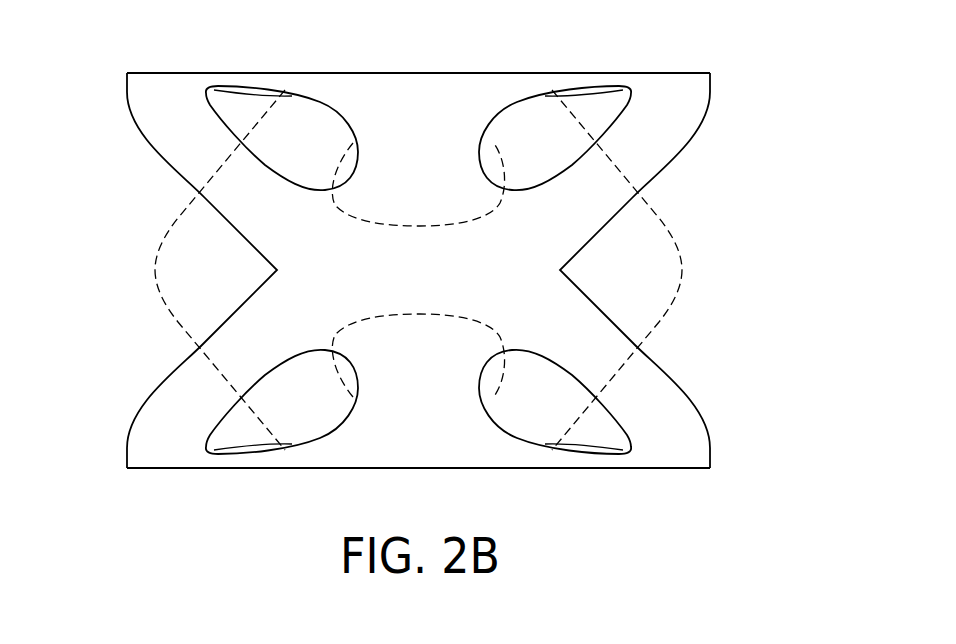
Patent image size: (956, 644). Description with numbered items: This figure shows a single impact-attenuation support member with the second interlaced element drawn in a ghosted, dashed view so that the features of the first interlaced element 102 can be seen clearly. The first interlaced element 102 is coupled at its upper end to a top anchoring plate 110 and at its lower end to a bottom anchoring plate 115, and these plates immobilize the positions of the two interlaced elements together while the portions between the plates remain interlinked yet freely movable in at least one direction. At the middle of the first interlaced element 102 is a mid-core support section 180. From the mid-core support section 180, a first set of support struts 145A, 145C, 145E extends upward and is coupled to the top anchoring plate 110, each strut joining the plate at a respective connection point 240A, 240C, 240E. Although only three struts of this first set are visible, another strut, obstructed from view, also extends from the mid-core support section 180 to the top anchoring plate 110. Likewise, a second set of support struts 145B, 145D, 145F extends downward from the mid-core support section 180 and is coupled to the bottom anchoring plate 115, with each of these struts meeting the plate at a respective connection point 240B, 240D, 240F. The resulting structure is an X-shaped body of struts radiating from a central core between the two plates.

The first interlaced element 102 is at (650, 190).
The top anchoring plate 110 is at (420, 72).
The bottom anchoring plate 115 is at (478, 469).
The support strut 145A is at (197, 150).
The support strut 145B is at (197, 390).
The support strut 145C is at (420, 148).
The support strut 145D is at (420, 392).
The support strut 145E is at (640, 150).
The support strut 145F is at (640, 392).
The mid-core support section 180 is at (443, 281).
The connection point 240A is at (162, 107).
The connection point 240B is at (163, 440).
The connection point 240C is at (410, 100).
The connection point 240D is at (410, 440).
The connection point 240E is at (673, 100).
The connection point 240F is at (673, 440).